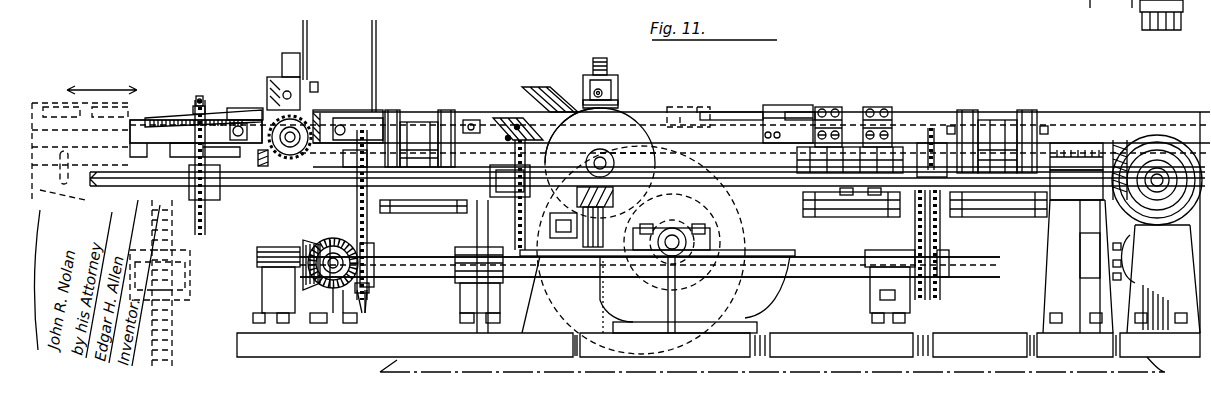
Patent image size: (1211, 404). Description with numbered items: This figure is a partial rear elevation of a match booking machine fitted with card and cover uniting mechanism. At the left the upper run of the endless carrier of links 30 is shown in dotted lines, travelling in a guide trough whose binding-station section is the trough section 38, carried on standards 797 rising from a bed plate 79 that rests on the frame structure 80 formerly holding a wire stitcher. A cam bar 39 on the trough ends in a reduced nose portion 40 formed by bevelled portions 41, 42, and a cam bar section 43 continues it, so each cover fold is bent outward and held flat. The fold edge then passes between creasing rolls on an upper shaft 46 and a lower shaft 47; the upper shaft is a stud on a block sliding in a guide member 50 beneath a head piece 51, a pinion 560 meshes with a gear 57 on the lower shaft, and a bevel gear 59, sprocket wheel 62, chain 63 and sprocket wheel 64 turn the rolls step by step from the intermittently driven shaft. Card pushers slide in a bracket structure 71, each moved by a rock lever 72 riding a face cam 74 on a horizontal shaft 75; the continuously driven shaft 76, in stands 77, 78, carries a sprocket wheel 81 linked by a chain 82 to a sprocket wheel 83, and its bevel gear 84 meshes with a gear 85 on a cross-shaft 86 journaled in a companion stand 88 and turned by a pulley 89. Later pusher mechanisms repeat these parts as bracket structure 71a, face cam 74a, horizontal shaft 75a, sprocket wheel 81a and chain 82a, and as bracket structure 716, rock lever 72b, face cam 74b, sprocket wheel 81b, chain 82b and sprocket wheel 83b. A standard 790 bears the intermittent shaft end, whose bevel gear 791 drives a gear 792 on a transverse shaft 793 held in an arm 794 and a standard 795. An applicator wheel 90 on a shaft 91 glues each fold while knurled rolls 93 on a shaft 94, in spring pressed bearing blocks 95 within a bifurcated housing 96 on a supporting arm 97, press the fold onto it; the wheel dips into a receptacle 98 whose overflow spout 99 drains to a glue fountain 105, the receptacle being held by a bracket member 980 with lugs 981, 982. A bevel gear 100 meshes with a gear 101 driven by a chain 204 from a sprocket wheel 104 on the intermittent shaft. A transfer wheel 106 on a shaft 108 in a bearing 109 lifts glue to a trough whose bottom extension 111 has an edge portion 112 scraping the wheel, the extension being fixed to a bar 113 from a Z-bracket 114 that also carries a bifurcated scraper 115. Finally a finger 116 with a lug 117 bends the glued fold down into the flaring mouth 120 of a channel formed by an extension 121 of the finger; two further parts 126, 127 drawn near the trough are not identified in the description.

The upper run of carrier chain 30 is at (49, 95).
The guide trough section 38 is at (140, 130).
The cam bar 39 is at (236, 108).
The reduced nose portion 40 is at (160, 120).
The bevelled portion 41 is at (185, 113).
The bevelled portion 42 is at (237, 122).
The cam bar section 43 is at (325, 113).
The upper shaft 46 is at (306, 78).
The lower shaft 47 is at (296, 145).
The guide member 50 is at (268, 78).
The head piece 51 is at (283, 58).
The gear 57 is at (289, 158).
The bevel gear 59 is at (262, 166).
The sprocket wheel 62 is at (199, 96).
The chain 63 is at (195, 106).
The sprocket wheel 64 is at (204, 228).
The bracket structure 71 is at (383, 213).
The bracket structure 71a is at (815, 217).
The bracket structure 716 is at (955, 220).
The rock lever 72 is at (392, 110).
The rock lever 72b is at (968, 110).
The face cam 74 is at (420, 122).
The face cam 74a is at (874, 196).
The face cam 74b is at (991, 130).
The horizontal shaft 75 is at (343, 158).
The horizontal shaft 75a is at (792, 163).
The continuously driven shaft 76 is at (443, 262).
The stand 77 is at (278, 301).
The stand 78 is at (890, 303).
The bed plate 79 is at (233, 348).
The standard 790 is at (1089, 309).
The bevel gear 791 is at (1118, 140).
The bevel gear 792 is at (1166, 158).
The transverse shaft 793 is at (1156, 170).
The arm 794 is at (1126, 12).
The standard 795 is at (1175, 305).
The standards 797 is at (512, 330).
The frame structure 80 is at (772, 367).
The sprocket wheel 81 is at (364, 300).
The sprocket wheel 81a is at (880, 296).
The sprocket wheel 81b is at (940, 300).
The chain 82 is at (370, 285).
The chain 82a is at (908, 239).
The chain 82b is at (950, 258).
The sprocket wheel 83 is at (362, 130).
The sprocket wheel 83b is at (931, 128).
The bevel gear 84 is at (302, 250).
The bevel gear 85 is at (340, 243).
The cross-shaft 86 is at (374, 241).
The companion stand 88 is at (346, 325).
The pulley 89 is at (318, 329).
The applicator wheel 90 is at (624, 132).
The shaft 91 is at (600, 149).
The knurled rolls 93 is at (620, 104).
The shaft 94 is at (613, 72).
The bearing blocks 95 is at (615, 92).
The bifurcated housing 96 is at (590, 75).
The supporting arm 97 is at (563, 86).
The receptacle 98 is at (745, 226).
The overflow spout 99 is at (563, 240).
The bevel gear 100 is at (660, 158).
The bevel gear 101 is at (551, 99).
The sprocket wheel 104 is at (477, 230).
The glue fountain 105 is at (766, 302).
The transfer wheel 106 is at (685, 339).
The shaft 108 is at (672, 257).
The bearing 109 is at (700, 257).
The horizontal bottom extension 111 is at (660, 229).
The free lateral edge portion 112 is at (640, 208).
The bar 113 is at (542, 258).
The Z-bracket 114 is at (515, 125).
The bifurcated scraper 115 is at (521, 140).
The finger 116 is at (763, 121).
The lug 117 is at (770, 130).
The flaring mouth 120 is at (770, 105).
The extension 121 is at (800, 108).
The terminal block 126 is at (835, 109).
The terminal block 127 is at (871, 109).
The chain 204 is at (562, 229).
The pinion 560 is at (318, 85).
The bracket member 980 is at (591, 250).
The upstanding lug 981 is at (648, 252).
The depending lug 982 is at (603, 280).